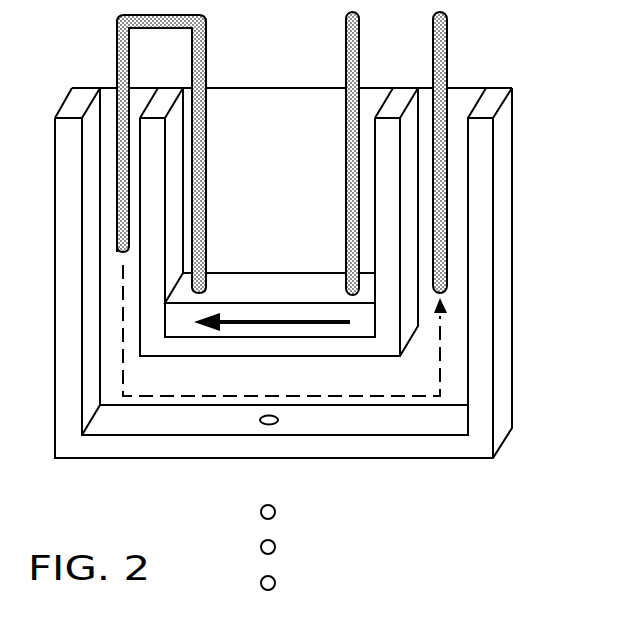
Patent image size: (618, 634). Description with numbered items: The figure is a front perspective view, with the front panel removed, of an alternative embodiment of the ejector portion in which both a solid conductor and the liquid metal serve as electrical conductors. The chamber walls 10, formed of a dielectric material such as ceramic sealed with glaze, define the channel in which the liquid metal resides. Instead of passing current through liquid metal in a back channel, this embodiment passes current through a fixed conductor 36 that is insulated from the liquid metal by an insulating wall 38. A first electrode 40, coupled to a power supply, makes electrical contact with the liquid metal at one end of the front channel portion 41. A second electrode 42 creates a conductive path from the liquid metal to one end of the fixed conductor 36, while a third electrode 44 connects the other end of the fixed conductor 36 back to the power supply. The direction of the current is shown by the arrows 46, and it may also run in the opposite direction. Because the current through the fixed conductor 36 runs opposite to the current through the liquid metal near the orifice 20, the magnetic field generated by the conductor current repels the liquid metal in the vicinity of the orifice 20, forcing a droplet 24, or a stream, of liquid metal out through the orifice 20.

The chamber walls 10 is at (483, 143).
The orifice 20 is at (278, 421).
The droplet 24 is at (276, 587).
The fixed conductor 36 is at (322, 285).
The insulating wall 38 is at (338, 345).
The first electrode 40 is at (433, 72).
The front channel portion 41 is at (407, 367).
The second electrode 42 is at (117, 52).
The third electrode 44 is at (346, 53).
The arrows 46 is at (213, 314).